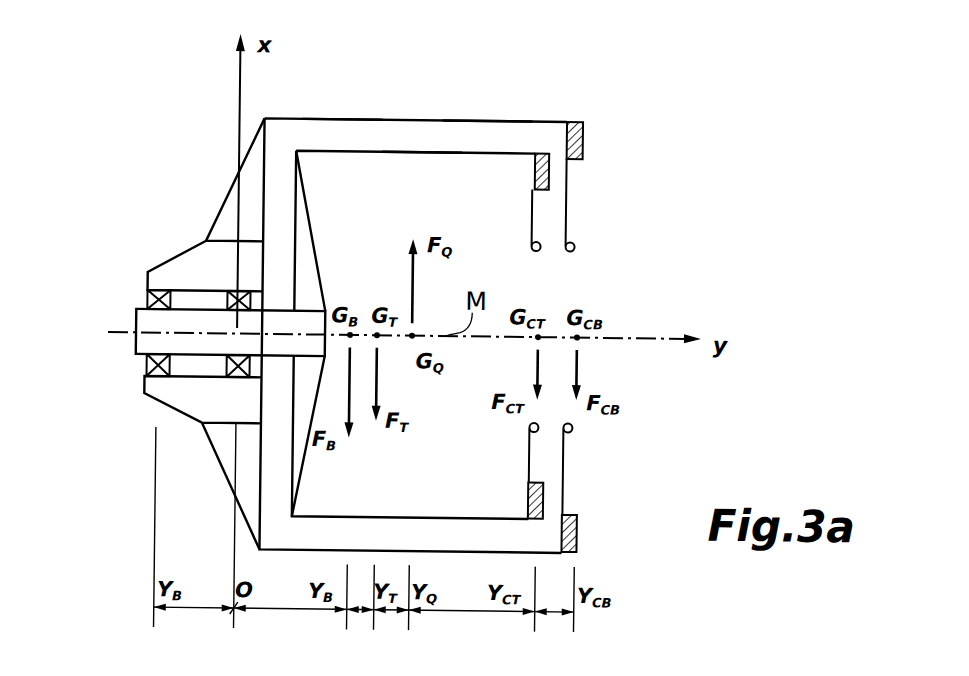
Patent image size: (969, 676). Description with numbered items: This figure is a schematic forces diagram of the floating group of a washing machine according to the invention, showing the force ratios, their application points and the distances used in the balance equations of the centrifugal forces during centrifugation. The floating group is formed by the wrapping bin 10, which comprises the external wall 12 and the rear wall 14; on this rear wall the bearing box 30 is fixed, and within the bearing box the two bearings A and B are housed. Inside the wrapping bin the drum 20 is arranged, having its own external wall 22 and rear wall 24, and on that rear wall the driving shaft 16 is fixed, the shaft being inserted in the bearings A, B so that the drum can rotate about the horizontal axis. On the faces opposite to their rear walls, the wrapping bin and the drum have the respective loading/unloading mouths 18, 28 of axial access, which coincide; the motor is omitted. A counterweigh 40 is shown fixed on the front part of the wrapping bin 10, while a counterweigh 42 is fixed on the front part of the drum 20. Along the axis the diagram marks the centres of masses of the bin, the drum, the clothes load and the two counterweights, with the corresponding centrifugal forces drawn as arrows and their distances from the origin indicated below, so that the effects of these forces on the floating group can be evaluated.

The wrapping bin 10 is at (340, 108).
The external wall 12 is at (393, 120).
The rear wall 14 is at (232, 204).
The driving shaft 16 is at (152, 324).
The loading/unloading mouth 18 is at (573, 263).
The drum 20 is at (482, 140).
The external wall 22 is at (415, 152).
The rear wall 24 is at (310, 240).
The loading/unloading mouth 28 is at (535, 279).
The bearing box 30 is at (167, 394).
The counterweigh 40 is at (581, 135).
The counterweigh 42 is at (547, 176).
The bearing A is at (233, 293).
The bearing B is at (160, 293).